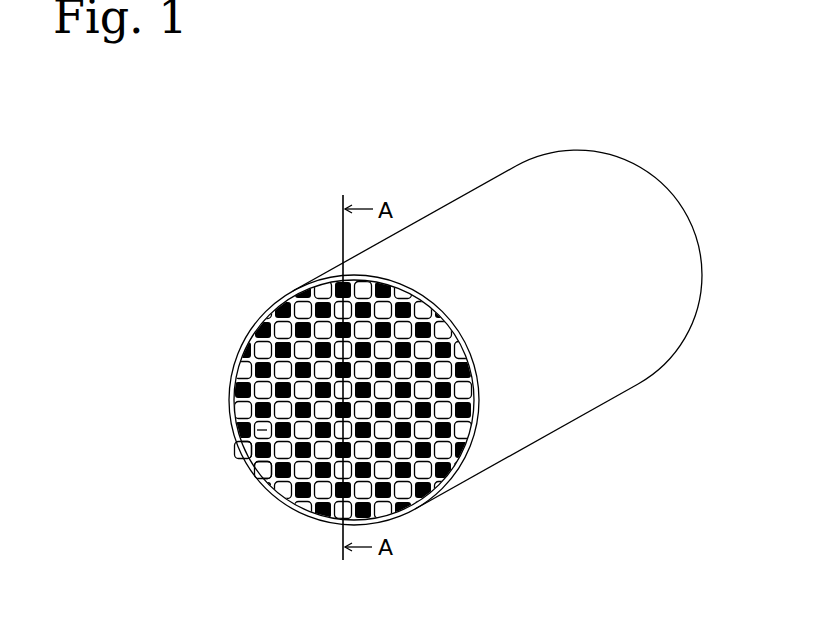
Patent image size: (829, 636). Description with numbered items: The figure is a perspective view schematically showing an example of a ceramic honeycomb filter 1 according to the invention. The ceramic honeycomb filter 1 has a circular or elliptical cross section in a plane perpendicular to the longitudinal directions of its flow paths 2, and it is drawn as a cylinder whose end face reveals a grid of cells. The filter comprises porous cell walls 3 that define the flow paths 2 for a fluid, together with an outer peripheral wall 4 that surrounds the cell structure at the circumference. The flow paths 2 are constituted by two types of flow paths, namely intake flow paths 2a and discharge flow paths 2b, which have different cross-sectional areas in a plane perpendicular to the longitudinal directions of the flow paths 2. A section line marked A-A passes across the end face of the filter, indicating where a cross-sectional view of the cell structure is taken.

The ceramic honeycomb filter 1 is at (506, 163).
The flow paths 2 is at (180, 467).
The intake flow paths 2a is at (242, 446).
The discharge flow paths 2b is at (260, 477).
The porous cell walls 3 is at (273, 350).
The outer peripheral wall 4 is at (463, 204).